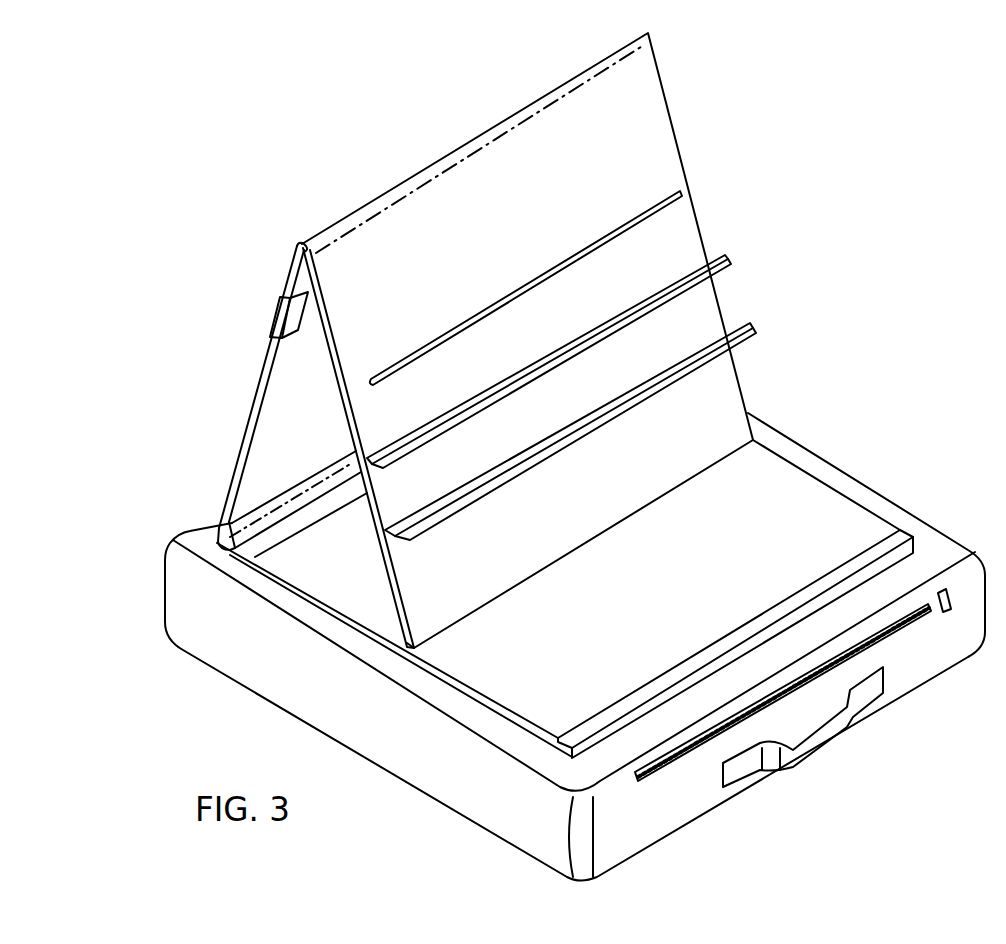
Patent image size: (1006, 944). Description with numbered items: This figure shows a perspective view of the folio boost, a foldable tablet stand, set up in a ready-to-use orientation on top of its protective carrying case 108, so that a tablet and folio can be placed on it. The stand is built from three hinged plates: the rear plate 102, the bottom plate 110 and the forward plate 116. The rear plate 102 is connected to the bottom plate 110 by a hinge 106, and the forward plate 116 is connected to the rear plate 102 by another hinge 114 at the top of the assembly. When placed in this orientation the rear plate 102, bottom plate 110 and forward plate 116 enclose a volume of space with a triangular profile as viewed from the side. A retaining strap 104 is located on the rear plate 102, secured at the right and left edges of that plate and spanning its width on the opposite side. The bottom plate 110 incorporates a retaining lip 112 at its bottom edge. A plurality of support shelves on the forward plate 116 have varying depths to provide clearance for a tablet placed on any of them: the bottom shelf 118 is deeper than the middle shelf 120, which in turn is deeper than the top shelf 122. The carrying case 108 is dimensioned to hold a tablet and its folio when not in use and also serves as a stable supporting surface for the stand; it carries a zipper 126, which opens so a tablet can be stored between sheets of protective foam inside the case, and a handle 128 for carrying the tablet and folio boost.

The rear plate 102 is at (330, 403).
The retaining strap 104 is at (282, 320).
The hinge 106 is at (220, 530).
The protective carrying case 108 is at (247, 690).
The bottom plate 110 is at (580, 653).
The retaining lip 112 is at (673, 670).
The hinge 114 is at (648, 34).
The forward plate 116 is at (680, 131).
The bottom shelf 118 is at (633, 388).
The middle shelf 120 is at (608, 318).
The top shelf 122 is at (587, 247).
The zipper 126 is at (908, 613).
The handle 128 is at (807, 750).